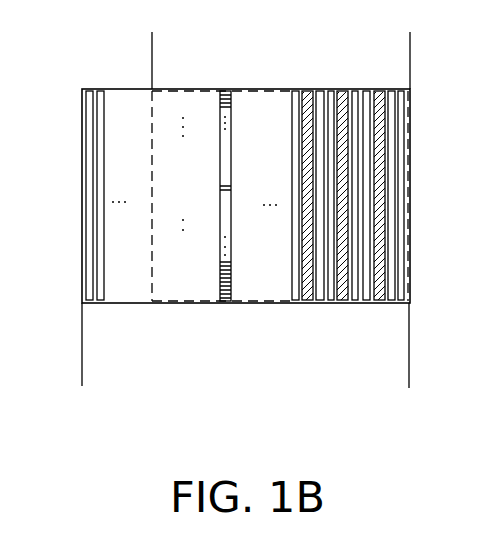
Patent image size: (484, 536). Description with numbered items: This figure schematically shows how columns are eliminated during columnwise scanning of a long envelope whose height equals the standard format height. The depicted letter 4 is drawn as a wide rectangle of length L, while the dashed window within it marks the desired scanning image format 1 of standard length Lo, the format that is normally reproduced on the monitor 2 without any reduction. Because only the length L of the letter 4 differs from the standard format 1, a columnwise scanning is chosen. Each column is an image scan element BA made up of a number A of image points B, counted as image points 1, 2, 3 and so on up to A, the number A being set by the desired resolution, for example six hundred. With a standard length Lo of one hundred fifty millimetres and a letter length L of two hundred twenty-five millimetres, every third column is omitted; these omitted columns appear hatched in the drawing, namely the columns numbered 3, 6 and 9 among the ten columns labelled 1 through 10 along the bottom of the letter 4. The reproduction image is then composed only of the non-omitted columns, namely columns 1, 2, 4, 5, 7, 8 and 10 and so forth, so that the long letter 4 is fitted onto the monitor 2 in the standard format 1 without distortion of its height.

The standard format 1 is at (219, 298).
The monitor 2 is at (219, 286).
The third layer / strip 3 is at (219, 265).
The letter 4 is at (125, 133).
The fifth strip 5 is at (350, 304).
The sixth strip 6 is at (333, 304).
The seventh strip 7 is at (316, 304).
The eighth strip 8 is at (298, 304).
The ninth strip 9 is at (282, 304).
The tenth strip 10 is at (262, 304).
The number of image points A is at (220, 105).
The image point B is at (233, 186).
The image scan element BA is at (231, 218).
The length of the letter L is at (409, 378).
The standard length Lo is at (152, 43).